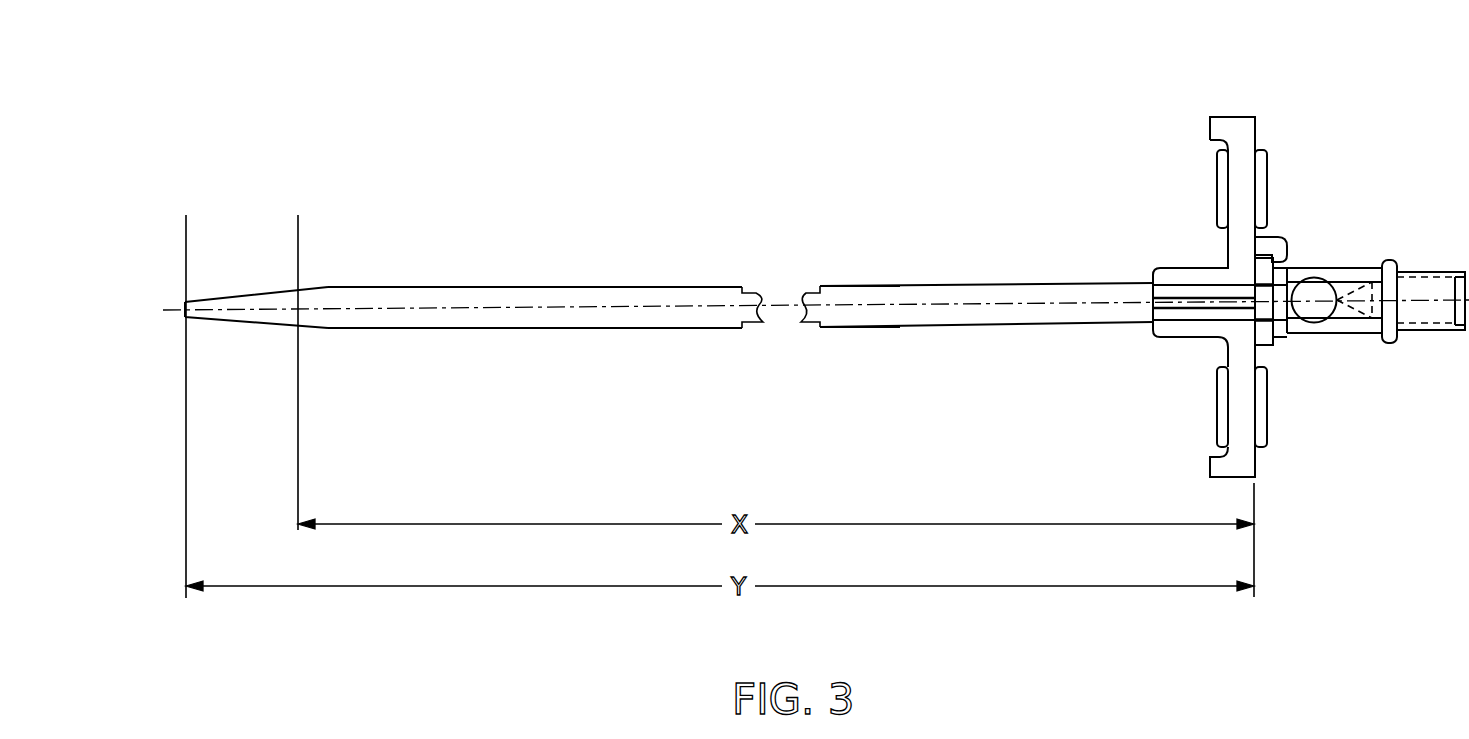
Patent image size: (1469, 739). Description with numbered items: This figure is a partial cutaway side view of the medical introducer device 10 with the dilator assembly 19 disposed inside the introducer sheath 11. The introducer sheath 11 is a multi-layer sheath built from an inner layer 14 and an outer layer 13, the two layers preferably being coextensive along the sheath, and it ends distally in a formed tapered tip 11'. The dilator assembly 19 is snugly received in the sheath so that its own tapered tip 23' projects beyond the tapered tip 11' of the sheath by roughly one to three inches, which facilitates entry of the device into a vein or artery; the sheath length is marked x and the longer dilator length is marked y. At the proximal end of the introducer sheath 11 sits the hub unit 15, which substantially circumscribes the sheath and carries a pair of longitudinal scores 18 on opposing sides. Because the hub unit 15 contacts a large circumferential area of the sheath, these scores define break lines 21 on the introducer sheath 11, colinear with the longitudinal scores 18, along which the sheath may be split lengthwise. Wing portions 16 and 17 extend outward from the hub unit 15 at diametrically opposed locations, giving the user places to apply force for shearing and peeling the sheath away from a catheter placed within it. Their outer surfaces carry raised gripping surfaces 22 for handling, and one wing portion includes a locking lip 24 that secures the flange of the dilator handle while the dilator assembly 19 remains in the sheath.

The medical introducer device 10 is at (742, 156).
The introducer sheath 11 is at (1037, 284).
The formed tapered tip 11' is at (535, 287).
The outer layer 13 is at (618, 287).
The inner layer 14 is at (748, 293).
The hub unit 15 is at (1200, 338).
The wing portion 16 is at (1233, 117).
The wing portion 17 is at (1257, 457).
The longitudinal scores 18 is at (1152, 313).
The dilator assembly 19 is at (1331, 335).
The break lines 21 is at (845, 305).
The raised gripping surfaces 22 is at (1267, 188).
The tapered tip 23' is at (256, 282).
The locking lip 24 is at (1288, 240).